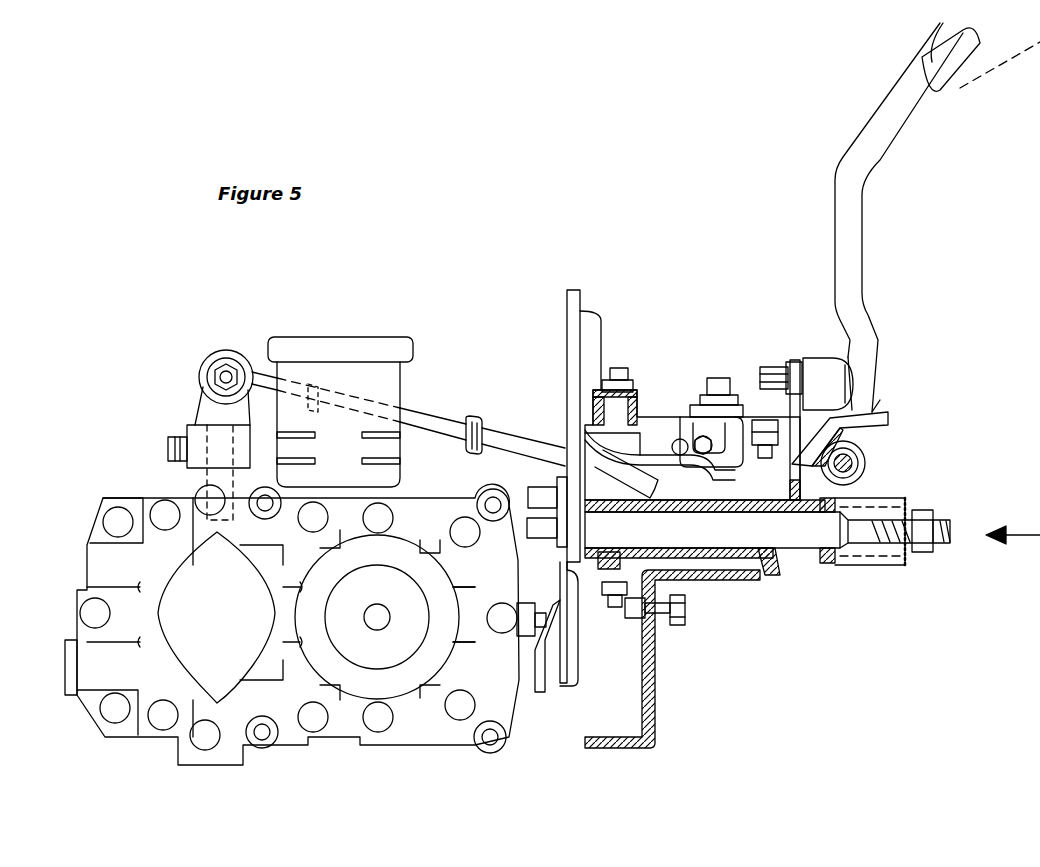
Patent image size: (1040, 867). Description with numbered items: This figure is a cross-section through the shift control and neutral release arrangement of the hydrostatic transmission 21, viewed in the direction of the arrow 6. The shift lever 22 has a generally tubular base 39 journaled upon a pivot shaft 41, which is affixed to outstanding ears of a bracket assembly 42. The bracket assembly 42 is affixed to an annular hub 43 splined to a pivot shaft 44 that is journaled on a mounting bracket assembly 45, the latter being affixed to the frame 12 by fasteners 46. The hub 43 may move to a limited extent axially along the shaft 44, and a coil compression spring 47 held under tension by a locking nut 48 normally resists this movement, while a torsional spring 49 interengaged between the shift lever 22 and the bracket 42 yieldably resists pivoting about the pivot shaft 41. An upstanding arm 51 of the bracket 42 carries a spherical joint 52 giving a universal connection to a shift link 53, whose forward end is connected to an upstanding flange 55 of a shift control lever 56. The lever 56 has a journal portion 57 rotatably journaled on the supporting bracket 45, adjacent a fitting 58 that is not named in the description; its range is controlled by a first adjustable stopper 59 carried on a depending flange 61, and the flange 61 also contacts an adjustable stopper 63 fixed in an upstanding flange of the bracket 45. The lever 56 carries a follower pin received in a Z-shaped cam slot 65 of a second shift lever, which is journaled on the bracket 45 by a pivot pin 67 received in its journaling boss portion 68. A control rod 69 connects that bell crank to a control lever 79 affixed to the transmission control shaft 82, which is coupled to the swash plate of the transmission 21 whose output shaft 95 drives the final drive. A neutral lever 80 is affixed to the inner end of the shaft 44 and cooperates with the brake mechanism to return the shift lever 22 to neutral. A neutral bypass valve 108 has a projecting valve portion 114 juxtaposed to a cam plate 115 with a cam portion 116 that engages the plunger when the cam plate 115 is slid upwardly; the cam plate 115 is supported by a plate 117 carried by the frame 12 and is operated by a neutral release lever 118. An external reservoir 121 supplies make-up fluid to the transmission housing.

The direction arrow 6 is at (1013, 528).
The frame 12 is at (672, 659).
The hydrostatic transmission 21 is at (290, 604).
The shift lever 22 is at (853, 218).
The tubular base 39 is at (866, 458).
The pivot shaft 41 is at (853, 468).
The bracket assembly 42 is at (845, 505).
The annular hub 43 is at (767, 567).
The pivot shaft 44 is at (803, 537).
The mounting bracket assembly 45 is at (781, 562).
The fasteners 46 is at (686, 608).
The coil compression spring 47 is at (903, 566).
The locking nut 48 is at (925, 513).
The torsional spring 49 is at (873, 412).
The upstanding arm 51 is at (793, 362).
The spherical joint 52 is at (767, 367).
The shift link 53 is at (876, 340).
The upstanding flange 55 is at (801, 362).
The shift lever 56 is at (692, 427).
The journal portion 57 is at (662, 415).
The fitting 58 is at (615, 368).
The first adjustable stopper 59 is at (670, 507).
The depending flange 61 is at (800, 448).
The adjustable stopper 63 is at (712, 500).
The cam slot 65 is at (870, 428).
The pivot pin 67 is at (712, 380).
The journaling boss portion 68 is at (686, 420).
The control rod 69 is at (442, 428).
The control lever 79 is at (203, 398).
The neutral lever 80 is at (563, 490).
The transmission control shaft 82 is at (205, 440).
The output shaft 95 is at (380, 622).
The neutral bypass valve 108 is at (510, 637).
The projecting valve portion 114 is at (540, 605).
The cam plate 115 is at (553, 682).
The cam portion 116 is at (555, 665).
The plate 117 is at (577, 575).
The neutral release lever 118 is at (567, 377).
The external reservoir 121 is at (407, 373).